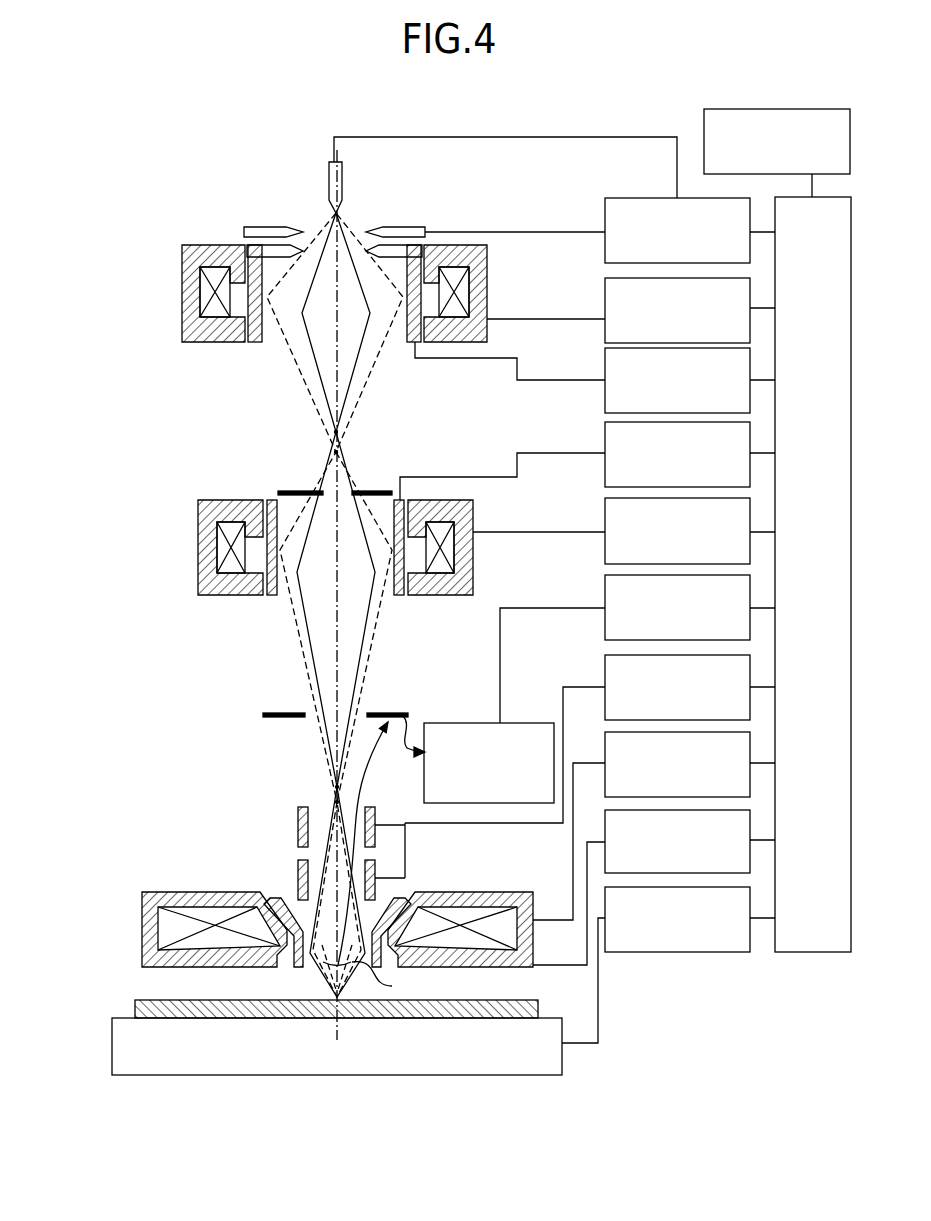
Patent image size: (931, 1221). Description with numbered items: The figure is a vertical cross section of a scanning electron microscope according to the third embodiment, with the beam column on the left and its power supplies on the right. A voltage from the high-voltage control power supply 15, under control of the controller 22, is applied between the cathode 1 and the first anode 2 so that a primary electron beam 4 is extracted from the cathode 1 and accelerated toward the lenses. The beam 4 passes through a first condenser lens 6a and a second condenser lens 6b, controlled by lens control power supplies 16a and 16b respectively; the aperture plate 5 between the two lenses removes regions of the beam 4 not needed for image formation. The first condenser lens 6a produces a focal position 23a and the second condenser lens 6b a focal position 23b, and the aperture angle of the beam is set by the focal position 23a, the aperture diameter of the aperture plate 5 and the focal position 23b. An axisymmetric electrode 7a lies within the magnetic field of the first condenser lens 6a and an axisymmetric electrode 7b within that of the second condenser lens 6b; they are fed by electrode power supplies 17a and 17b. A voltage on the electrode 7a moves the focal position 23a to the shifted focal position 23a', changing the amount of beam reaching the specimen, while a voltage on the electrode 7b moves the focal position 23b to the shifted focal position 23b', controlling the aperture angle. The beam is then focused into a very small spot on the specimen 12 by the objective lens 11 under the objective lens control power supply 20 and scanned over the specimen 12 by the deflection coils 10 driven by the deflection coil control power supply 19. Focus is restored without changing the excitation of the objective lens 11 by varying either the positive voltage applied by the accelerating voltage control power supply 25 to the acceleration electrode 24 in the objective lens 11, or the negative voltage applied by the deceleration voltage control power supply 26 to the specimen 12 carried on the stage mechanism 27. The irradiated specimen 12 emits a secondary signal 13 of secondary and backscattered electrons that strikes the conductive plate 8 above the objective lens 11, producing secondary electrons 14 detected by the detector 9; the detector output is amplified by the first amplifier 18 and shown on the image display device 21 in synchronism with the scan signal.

The cathode 1 is at (329, 182).
The first anode 2 is at (272, 228).
The primary electron beam 4 is at (352, 385).
The aperture plate 5 is at (278, 493).
The first condenser lens 6a is at (182, 290).
The second condenser lens 6b is at (198, 550).
The axisymmetric electrode 7a is at (250, 342).
The axisymmetric electrode 7b is at (268, 597).
The conductive plate 8 is at (263, 715).
The detector 9 is at (470, 723).
The deflection coils 10 is at (298, 872).
The objective lens 11 is at (142, 928).
The specimen 12 is at (135, 1003).
The secondary signal 13 is at (363, 767).
The secondary electrons 14 is at (418, 720).
The high-voltage control power supply 15 is at (605, 215).
The lens control power supply 16a is at (605, 297).
The lens control power supply 16b is at (605, 513).
The electrode power supply 17a is at (605, 367).
The electrode power supply 17b is at (605, 437).
The first amplifier 18 is at (605, 592).
The deflection coil control power supply 19 is at (605, 670).
The objective lens control power supply 20 is at (605, 742).
The image display device 21 is at (783, 109).
The controller 22 is at (815, 952).
The focal position of the first condenser lens 23a is at (282, 420).
The shifted focal position of the first condenser lens 23a' is at (280, 453).
The focal position of the second condenser lens 23b is at (282, 760).
The shifted focal position of the second condenser lens 23b' is at (280, 793).
The acceleration electrode 24 is at (403, 890).
The accelerating voltage control power supply 25 is at (605, 855).
The deceleration voltage control power supply 26 is at (683, 952).
The stage mechanism 27 is at (113, 1050).